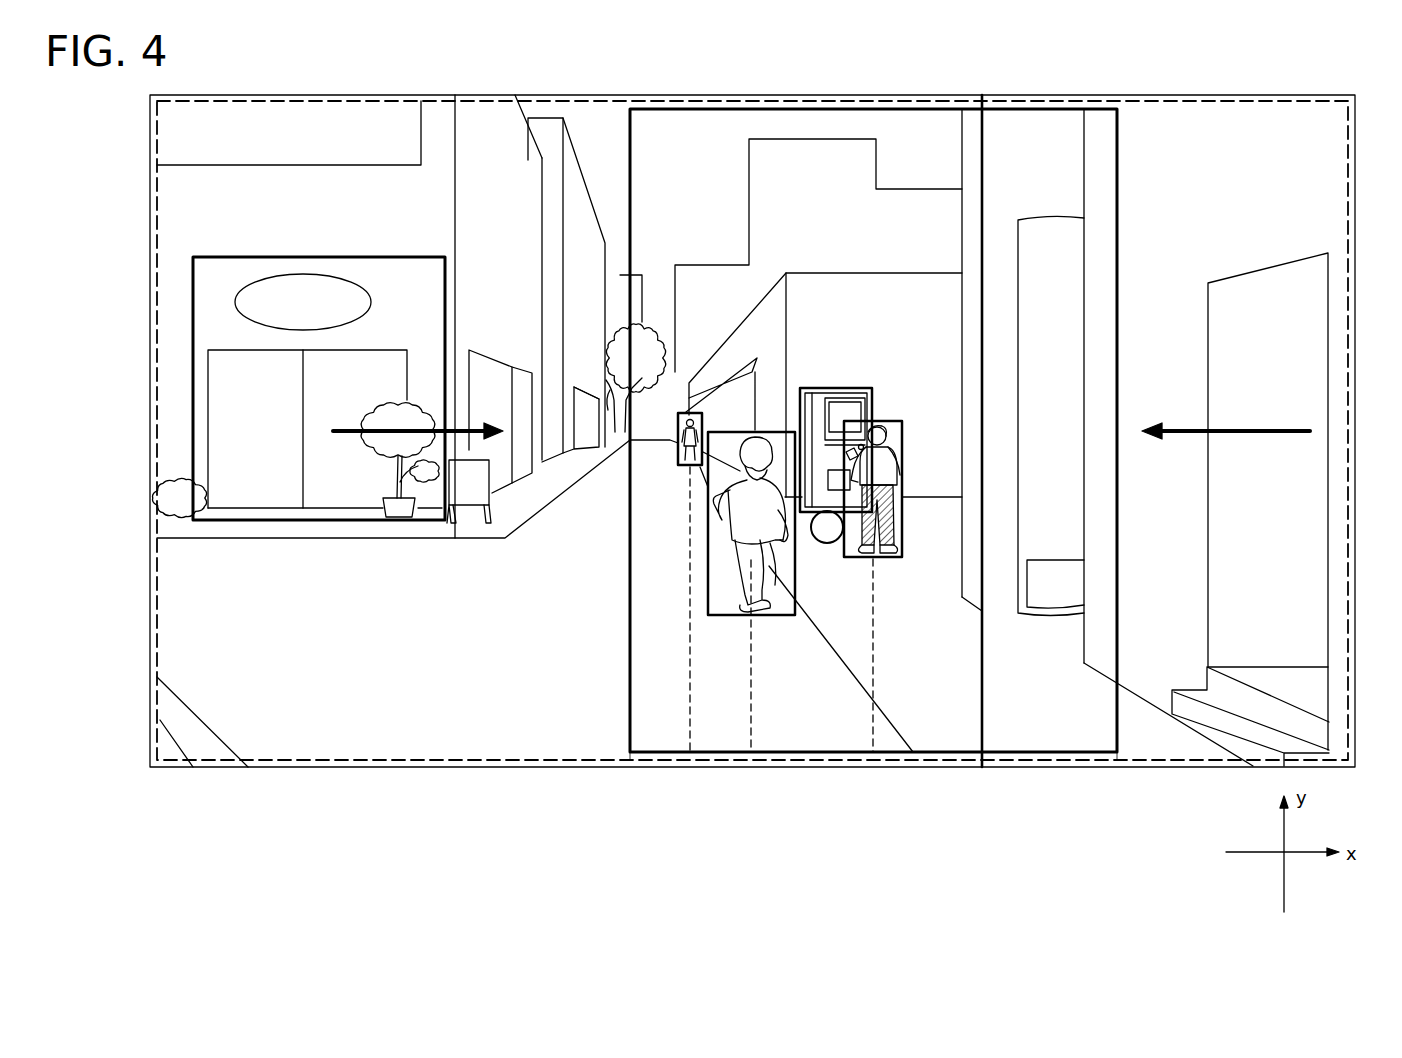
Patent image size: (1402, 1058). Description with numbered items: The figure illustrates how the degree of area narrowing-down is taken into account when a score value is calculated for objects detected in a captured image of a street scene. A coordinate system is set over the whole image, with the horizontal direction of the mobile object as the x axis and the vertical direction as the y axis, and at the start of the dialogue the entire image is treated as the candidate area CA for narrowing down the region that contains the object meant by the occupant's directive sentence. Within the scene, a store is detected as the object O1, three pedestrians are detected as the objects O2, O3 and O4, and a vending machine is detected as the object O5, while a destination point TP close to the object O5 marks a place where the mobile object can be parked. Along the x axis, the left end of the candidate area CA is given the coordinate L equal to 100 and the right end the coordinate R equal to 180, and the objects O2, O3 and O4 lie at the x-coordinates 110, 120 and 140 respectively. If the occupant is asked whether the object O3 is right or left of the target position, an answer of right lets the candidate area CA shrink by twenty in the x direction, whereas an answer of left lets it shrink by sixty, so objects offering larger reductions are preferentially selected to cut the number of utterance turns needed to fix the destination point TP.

The object O1 is at (319, 257).
The object O2 is at (686, 467).
The object O3 is at (758, 617).
The object O4 is at (893, 421).
The object O5 is at (838, 388).
The destination point TP is at (828, 544).
The candidate area CA is at (872, 109).
The x-coordinate L of left end of candidate area 100 is at (630, 776).
The x-coordinate ox of object O2 110 is at (691, 633).
The x-coordinate ox of object O3 120 is at (751, 680).
The x-coordinate ox of object O4 140 is at (873, 679).
The x-coordinate R of right end of candidate area 180 is at (1118, 776).